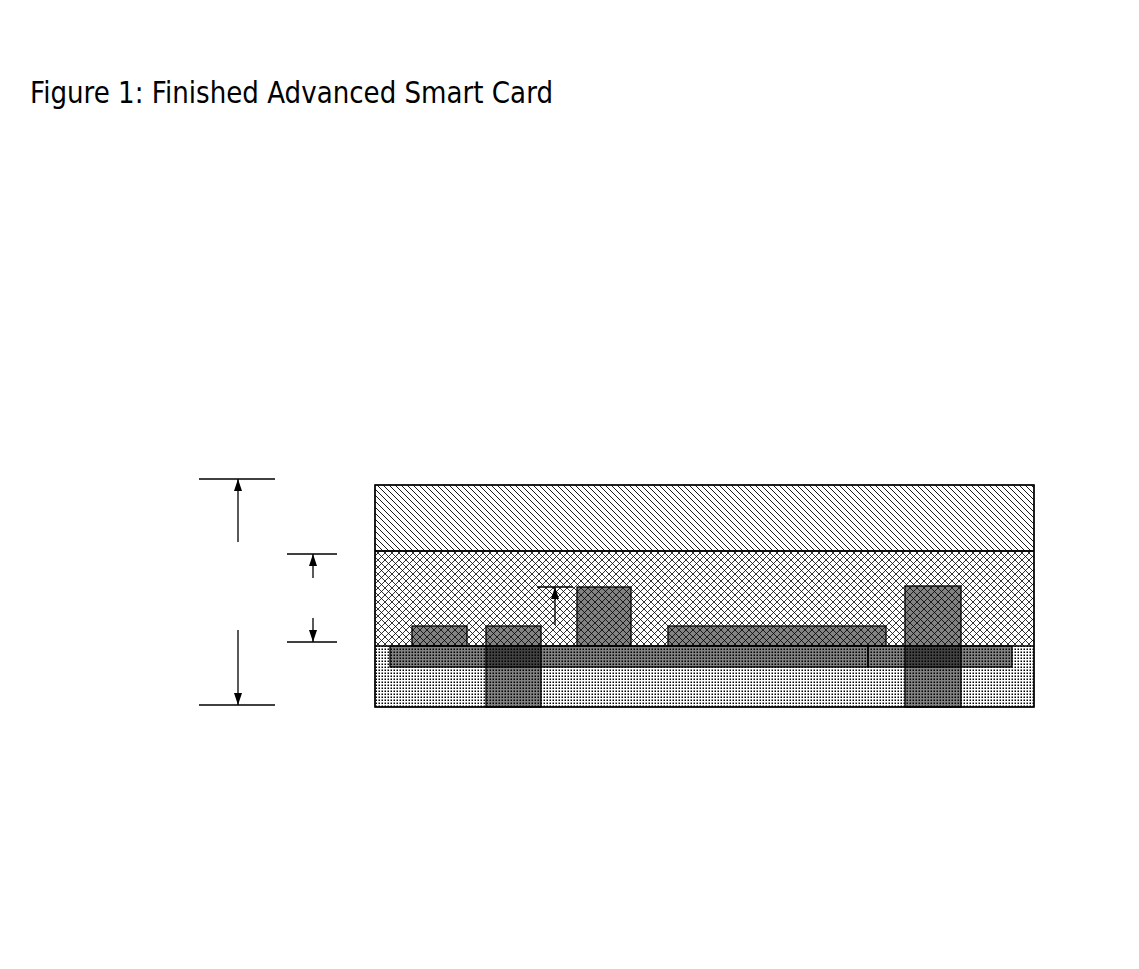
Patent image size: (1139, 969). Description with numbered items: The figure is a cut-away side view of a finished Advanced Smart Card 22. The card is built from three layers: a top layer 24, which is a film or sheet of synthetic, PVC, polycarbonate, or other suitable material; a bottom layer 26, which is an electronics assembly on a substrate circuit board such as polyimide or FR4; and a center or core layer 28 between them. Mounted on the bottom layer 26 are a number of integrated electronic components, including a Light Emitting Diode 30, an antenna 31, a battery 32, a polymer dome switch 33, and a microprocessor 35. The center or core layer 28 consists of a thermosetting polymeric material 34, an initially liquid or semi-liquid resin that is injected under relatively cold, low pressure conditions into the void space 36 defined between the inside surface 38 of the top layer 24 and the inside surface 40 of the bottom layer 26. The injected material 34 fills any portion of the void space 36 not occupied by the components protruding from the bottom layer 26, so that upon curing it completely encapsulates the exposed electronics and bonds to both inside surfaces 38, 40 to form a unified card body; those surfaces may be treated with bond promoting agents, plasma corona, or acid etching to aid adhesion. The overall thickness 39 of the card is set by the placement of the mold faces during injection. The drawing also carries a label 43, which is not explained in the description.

The Advanced Smart Card 22 is at (413, 358).
The top layer 24 is at (726, 515).
The bottom layer 26 is at (600, 680).
The center or core layer 28 is at (998, 607).
The Light Emitting Diode 30 is at (926, 600).
The antenna 31 is at (682, 667).
The battery 32 is at (813, 625).
The polymer dome switch 33 is at (513, 680).
The thermosetting polymeric material 34 is at (763, 595).
The microprocessor 35 is at (609, 623).
The void space 36 is at (312, 598).
The inside surface of the top layer 38 is at (886, 548).
The thickness 39 is at (237, 592).
The inside surface of the bottom layer 40 is at (978, 643).
The overlay boundary 43 is at (555, 543).